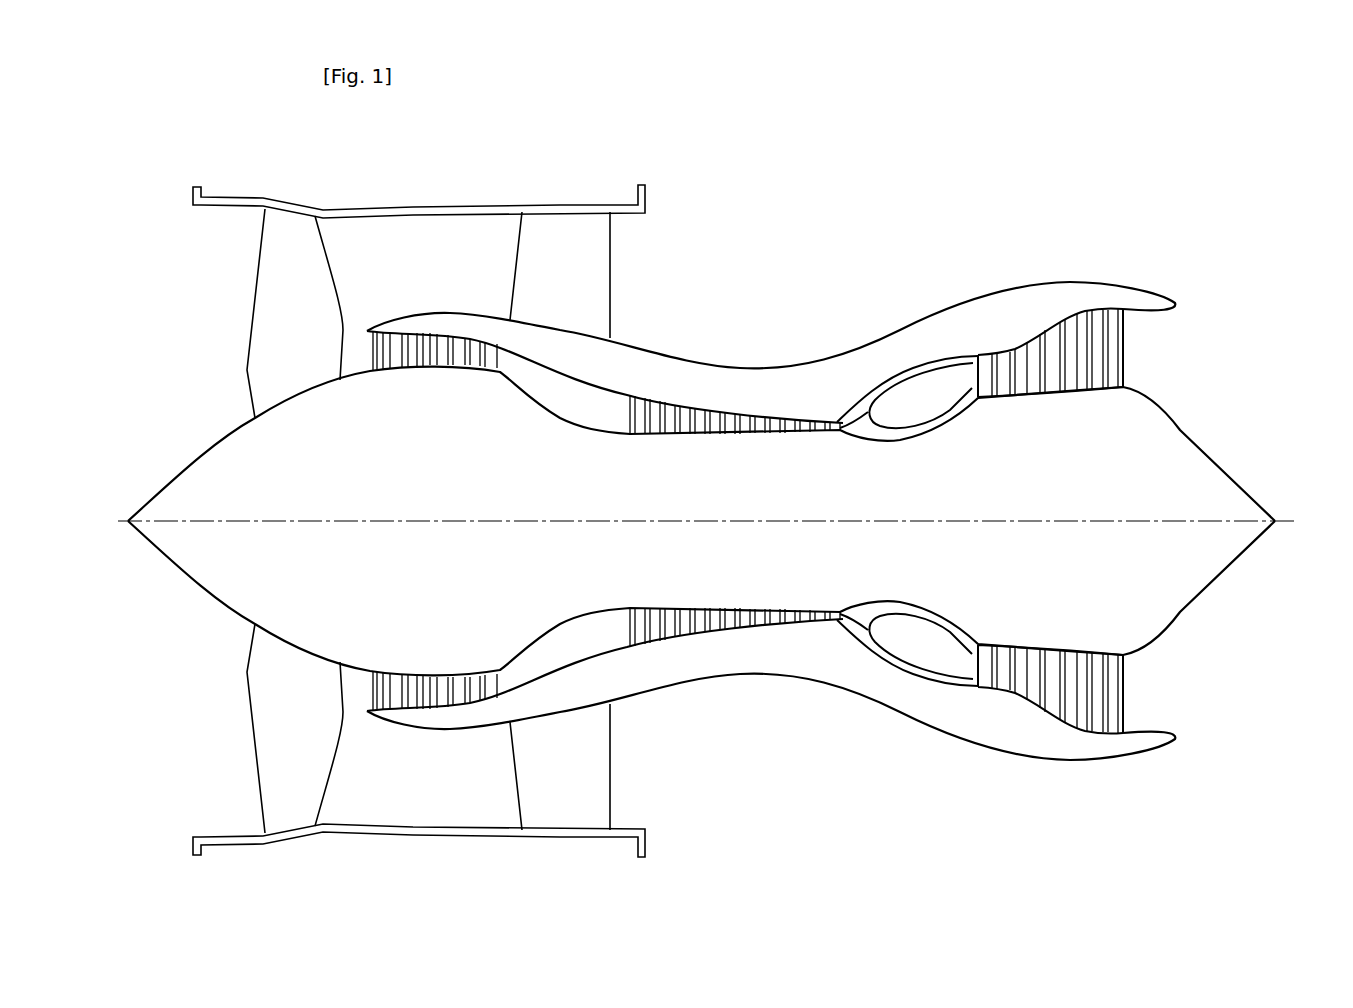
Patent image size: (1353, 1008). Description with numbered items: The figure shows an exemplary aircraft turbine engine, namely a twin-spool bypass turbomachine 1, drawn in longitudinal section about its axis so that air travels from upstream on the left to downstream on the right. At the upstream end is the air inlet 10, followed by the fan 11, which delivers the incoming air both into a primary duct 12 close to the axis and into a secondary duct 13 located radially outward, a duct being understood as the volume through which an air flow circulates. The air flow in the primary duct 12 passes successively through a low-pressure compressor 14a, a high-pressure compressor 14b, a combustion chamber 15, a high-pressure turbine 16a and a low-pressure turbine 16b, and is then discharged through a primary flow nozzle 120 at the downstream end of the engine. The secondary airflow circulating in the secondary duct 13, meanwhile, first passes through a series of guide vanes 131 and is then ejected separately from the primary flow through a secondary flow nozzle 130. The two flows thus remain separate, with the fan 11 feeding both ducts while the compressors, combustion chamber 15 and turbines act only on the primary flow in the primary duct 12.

The bypass turbomachine 1 is at (841, 164).
The air inlet 10 is at (152, 381).
The fan 11 is at (306, 327).
The primary duct 12 is at (364, 352).
The secondary duct 13 is at (430, 281).
The guide vanes 131 is at (577, 281).
The secondary flow nozzle 130 is at (662, 265).
The low-pressure compressor 14a is at (445, 724).
The high-pressure compressor 14b is at (692, 386).
The combustion chamber 15 is at (925, 651).
The high-pressure turbine 16a is at (1018, 675).
The low-pressure turbine 16b is at (1112, 691).
The primary flow nozzle 120 is at (1157, 352).